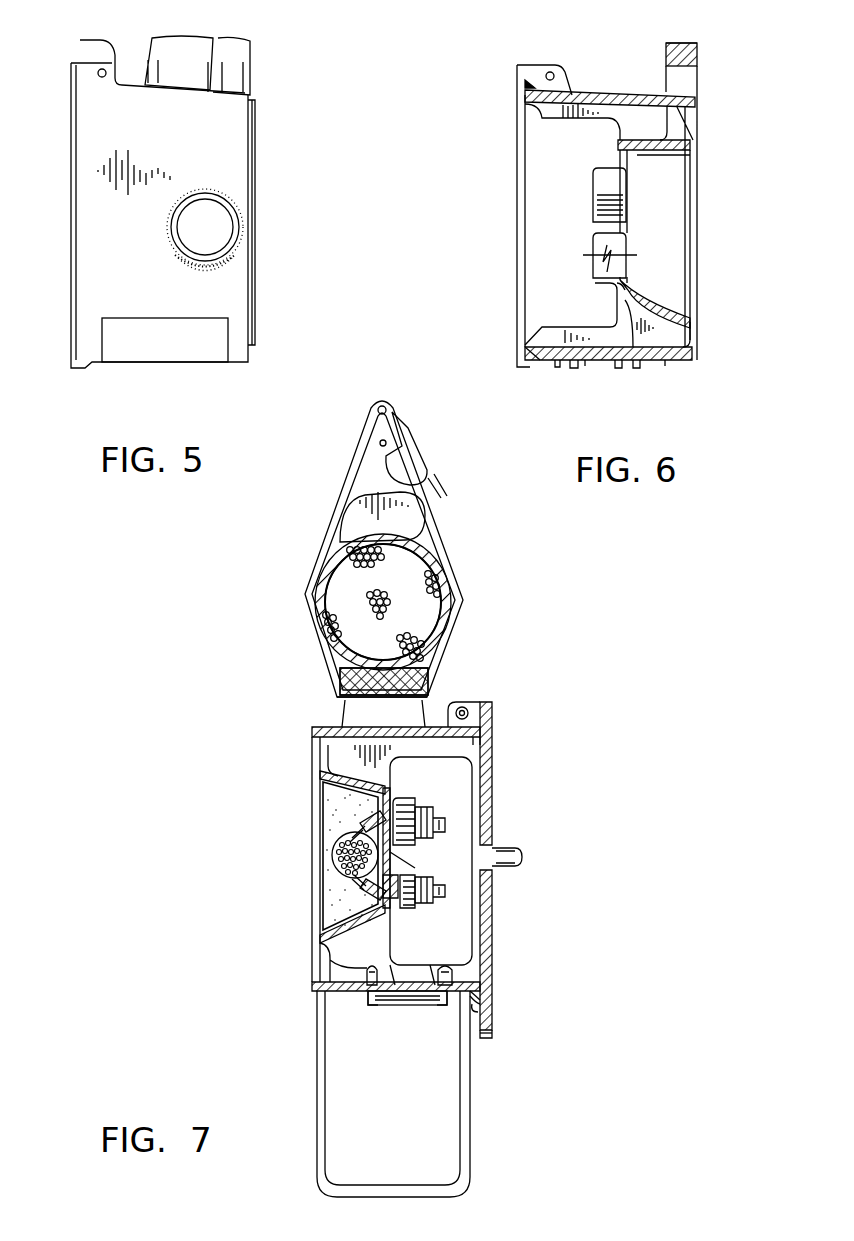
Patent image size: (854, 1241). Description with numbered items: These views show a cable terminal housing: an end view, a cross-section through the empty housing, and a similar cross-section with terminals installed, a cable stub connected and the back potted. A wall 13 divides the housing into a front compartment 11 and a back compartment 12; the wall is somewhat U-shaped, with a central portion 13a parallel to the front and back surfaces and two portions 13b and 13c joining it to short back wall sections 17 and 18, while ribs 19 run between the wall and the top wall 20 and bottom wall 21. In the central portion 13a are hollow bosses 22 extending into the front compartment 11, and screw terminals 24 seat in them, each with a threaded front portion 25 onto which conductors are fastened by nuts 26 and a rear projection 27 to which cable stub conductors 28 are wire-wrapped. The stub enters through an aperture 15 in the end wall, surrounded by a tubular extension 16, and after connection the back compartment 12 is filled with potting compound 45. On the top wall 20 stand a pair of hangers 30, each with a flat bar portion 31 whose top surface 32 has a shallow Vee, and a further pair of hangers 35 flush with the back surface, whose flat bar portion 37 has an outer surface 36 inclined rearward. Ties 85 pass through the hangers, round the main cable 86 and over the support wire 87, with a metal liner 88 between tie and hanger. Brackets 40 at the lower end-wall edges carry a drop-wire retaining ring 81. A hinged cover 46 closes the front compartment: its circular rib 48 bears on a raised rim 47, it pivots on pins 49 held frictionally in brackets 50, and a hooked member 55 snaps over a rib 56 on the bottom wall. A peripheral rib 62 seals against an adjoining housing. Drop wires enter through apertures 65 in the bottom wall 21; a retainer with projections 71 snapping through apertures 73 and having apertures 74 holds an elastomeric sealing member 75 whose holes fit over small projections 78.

In FIG. 6, the front compartment 11 is at (545, 160).
In FIG. 6, the back compartment 12 is at (665, 215).
In FIG. 6, the wall 13 is at (648, 168).
In FIG. 6, the central portion 13a is at (583, 255).
In FIG. 6, the joining portion 13b is at (640, 158).
In FIG. 6, the joining portion 13c is at (650, 300).
In FIG. 5, the aperture 15 is at (220, 232).
In FIG. 5, the tubular extension 16 is at (228, 205).
In FIG. 6, the back wall section 17 is at (690, 125).
In FIG. 6, the back wall section 18 is at (700, 348).
In FIG. 6, the ribs 19 is at (625, 118).
In FIG. 6, the top wall 20 is at (595, 92).
In FIG. 7, the top wall 20 is at (435, 727).
In FIG. 6, the bottom wall 21 is at (552, 368).
In FIG. 7, the bottom wall 21 is at (345, 991).
In FIG. 6, the hollow bosses 22 is at (593, 195).
In FIG. 7, the screw terminals 24 is at (410, 798).
In FIG. 7, the threaded front portions 25 is at (447, 823).
In FIG. 7, the nuts 26 is at (428, 815).
In FIG. 7, the projection 27 is at (362, 830).
In FIG. 7, the cable stub conductors 28 is at (370, 818).
In FIG. 5, the hangers 30 is at (188, 205).
In FIG. 7, the hangers 30 is at (330, 713).
In FIG. 7, the flat bar portion 31 is at (433, 700).
In FIG. 5, the top surface 32 is at (232, 20).
In FIG. 7, the top surface 32 is at (430, 688).
In FIG. 5, the hangers 35 is at (238, 47).
In FIG. 6, the hangers 35 is at (687, 49).
In FIG. 5, the outer surface 36 is at (250, 43).
In FIG. 6, the outer surface 36 is at (685, 43).
In FIG. 6, the flat bar portion 37 is at (700, 52).
In FIG. 5, the brackets 40 is at (150, 348).
In FIG. 7, the potting compound 45 is at (333, 853).
In FIG. 7, the hinged cover 46 is at (492, 810).
In FIG. 7, the raised rim 47 is at (485, 745).
In FIG. 7, the rib 48 is at (470, 702).
In FIG. 7, the pins 49 is at (488, 732).
In FIG. 5, the brackets 50 is at (150, 198).
In FIG. 6, the brackets 50 is at (552, 70).
In FIG. 7, the snap-action hooked member 55 is at (490, 1035).
In FIG. 6, the rib 56 is at (530, 365).
In FIG. 7, the rib 56 is at (482, 992).
In FIG. 7, the rib 62 is at (320, 742).
In FIG. 6, the apertures 65 is at (618, 368).
In FIG. 7, the apertures 65 is at (405, 1000).
In FIG. 7, the projections 71 is at (365, 980).
In FIG. 6, the apertures 73 is at (575, 368).
In FIG. 7, the apertures 73 is at (365, 968).
In FIG. 7, the apertures 74 is at (425, 1000).
In FIG. 7, the sealing member 75 is at (375, 1003).
In FIG. 6, the projections 78 is at (585, 367).
In FIG. 7, the retaining ring 81 is at (462, 1120).
In FIG. 7, the ties 85 is at (361, 543).
In FIG. 7, the main cable 86 is at (345, 545).
In FIG. 7, the support wire 87 is at (378, 410).
In FIG. 7, the metal bracket or liner 88 is at (345, 673).